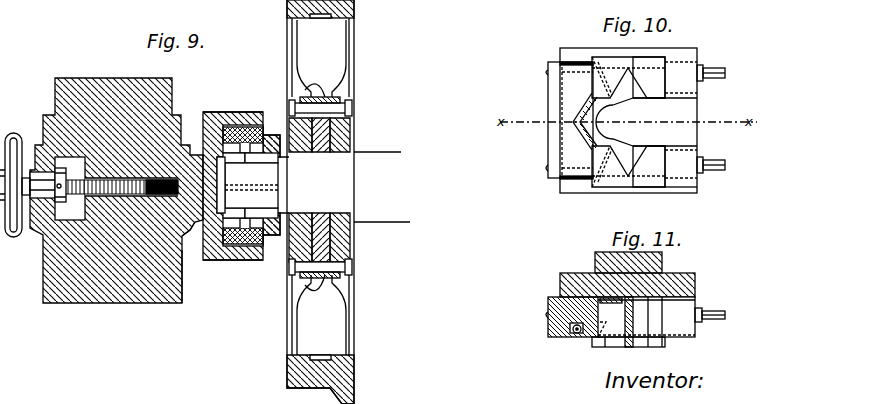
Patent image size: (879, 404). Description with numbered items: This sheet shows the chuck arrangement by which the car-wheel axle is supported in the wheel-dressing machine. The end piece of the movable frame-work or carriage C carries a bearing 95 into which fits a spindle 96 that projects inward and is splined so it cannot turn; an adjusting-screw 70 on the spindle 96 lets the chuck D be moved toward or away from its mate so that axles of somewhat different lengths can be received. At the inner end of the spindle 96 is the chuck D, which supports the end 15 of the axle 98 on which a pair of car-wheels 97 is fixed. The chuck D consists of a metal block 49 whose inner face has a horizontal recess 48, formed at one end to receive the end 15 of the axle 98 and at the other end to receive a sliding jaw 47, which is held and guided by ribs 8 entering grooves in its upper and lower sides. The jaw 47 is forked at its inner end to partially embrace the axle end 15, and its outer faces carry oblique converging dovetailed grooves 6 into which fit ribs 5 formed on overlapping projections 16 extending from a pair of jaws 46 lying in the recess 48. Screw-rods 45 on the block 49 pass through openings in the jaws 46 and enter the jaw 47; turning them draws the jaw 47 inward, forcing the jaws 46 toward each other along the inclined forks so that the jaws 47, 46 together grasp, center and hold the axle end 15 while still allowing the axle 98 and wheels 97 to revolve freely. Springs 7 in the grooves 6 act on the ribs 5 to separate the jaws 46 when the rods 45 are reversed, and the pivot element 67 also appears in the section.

In FIG. 9, the movable frame-work or carriage C is at (55, 100).
In FIG. 9, the chuck D is at (233, 187).
In FIG. 10, the chuck D is at (628, 111).
In FIG. 10, the rib 5 is at (598, 80).
In FIG. 11, the rib 5 is at (604, 323).
In FIG. 10, the dovetailed groove 6 is at (585, 110).
In FIG. 10, the spring 7 is at (573, 122).
In FIG. 9, the rib 8 is at (244, 135).
In FIG. 10, the rib 8 is at (560, 63).
In FIG. 9, the end of the axle 15 is at (247, 185).
In FIG. 9, the overlapping projection 16 is at (274, 188).
In FIG. 10, the overlapping projection 16 is at (597, 62).
In FIG. 11, the overlapping projection 16 is at (612, 347).
In FIG. 9, the screw-rod 45 is at (234, 186).
In FIG. 10, the screw-rod 45 is at (722, 78).
In FIG. 11, the screw-rod 45 is at (716, 320).
In FIG. 9, the jaw 46 is at (261, 186).
In FIG. 10, the jaw 46 is at (649, 122).
In FIG. 11, the jaw 46 is at (642, 343).
In FIG. 9, the sliding jaw 47 is at (262, 128).
In FIG. 10, the sliding jaw 47 is at (548, 106).
In FIG. 11, the sliding jaw 47 is at (548, 335).
In FIG. 10, the horizontal recess 48 is at (646, 122).
In FIG. 11, the horizontal recess 48 is at (683, 292).
In FIG. 9, the metal block 49 is at (189, 276).
In FIG. 10, the metal block 49 is at (690, 193).
In FIG. 11, the metal block 49 is at (560, 282).
In FIG. 11, the pivot pin 67 is at (578, 334).
In FIG. 9, the adjusting-screw 70 is at (76, 179).
In FIG. 9, the bearing 95 is at (53, 194).
In FIG. 9, the spindle 96 is at (195, 222).
In FIG. 11, the spindle 96 is at (595, 261).
In FIG. 9, the car-wheel 97 is at (290, 44).
In FIG. 9, the axle 98 is at (345, 190).